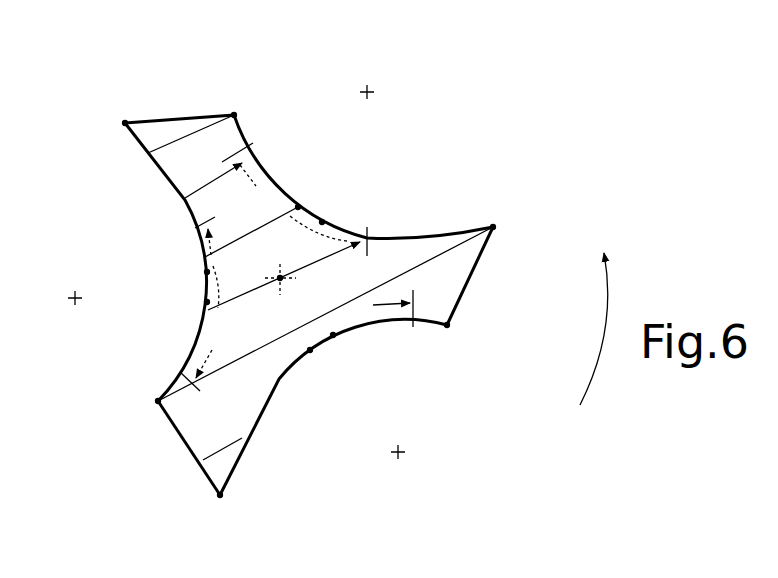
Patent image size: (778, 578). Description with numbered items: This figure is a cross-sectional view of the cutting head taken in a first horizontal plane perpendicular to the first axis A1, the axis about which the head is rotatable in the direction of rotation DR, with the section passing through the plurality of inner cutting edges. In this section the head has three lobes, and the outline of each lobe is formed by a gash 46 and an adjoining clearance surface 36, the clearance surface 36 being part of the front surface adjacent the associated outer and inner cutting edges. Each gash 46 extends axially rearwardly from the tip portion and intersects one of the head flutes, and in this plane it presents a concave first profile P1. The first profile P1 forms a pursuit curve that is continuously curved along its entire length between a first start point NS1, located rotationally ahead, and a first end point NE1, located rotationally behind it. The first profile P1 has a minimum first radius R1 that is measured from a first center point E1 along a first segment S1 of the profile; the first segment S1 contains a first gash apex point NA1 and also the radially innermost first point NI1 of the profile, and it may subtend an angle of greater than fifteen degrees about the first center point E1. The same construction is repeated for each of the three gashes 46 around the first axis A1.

The clearance surface 36 is at (181, 115).
The gash 46 is at (163, 180).
The first end point NE1 is at (123, 122).
The first start point NS1 is at (235, 113).
The first gash apex point NA1 is at (299, 205).
The radially innermost first point NI1 is at (324, 221).
The first profile P1 is at (190, 214).
The minimum first radius R1 is at (363, 96).
The first segment S1 is at (277, 215).
The first center point E1 is at (234, 268).
The first axis A1 is at (285, 275).
The direction of rotation DR is at (602, 314).